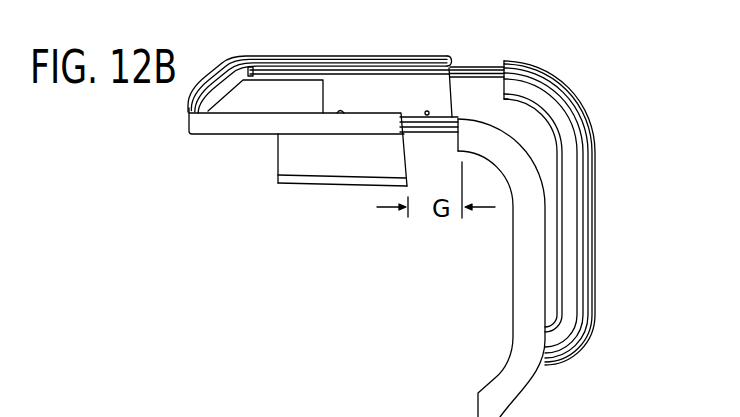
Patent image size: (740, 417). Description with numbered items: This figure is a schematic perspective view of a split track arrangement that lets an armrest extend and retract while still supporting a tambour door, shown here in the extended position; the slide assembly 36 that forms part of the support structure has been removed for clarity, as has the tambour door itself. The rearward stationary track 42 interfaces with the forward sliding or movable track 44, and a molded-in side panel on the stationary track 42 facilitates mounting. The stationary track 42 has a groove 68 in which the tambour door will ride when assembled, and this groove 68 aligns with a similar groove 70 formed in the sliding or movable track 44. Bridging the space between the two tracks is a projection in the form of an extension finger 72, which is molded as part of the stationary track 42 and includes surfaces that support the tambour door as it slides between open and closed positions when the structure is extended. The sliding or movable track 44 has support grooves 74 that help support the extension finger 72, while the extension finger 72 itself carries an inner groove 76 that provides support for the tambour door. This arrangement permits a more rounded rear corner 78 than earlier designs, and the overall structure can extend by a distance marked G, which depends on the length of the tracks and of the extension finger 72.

The slide assembly 36 is at (419, 302).
The stationary track 42 is at (595, 252).
The sliding or movable track 44 is at (203, 127).
The groove 68 is at (567, 91).
The groove 70 is at (355, 55).
The extension finger 72 is at (476, 67).
The support grooves 74 is at (452, 68).
The inner groove 76 is at (485, 78).
The rounded rear corner 78 is at (546, 70).